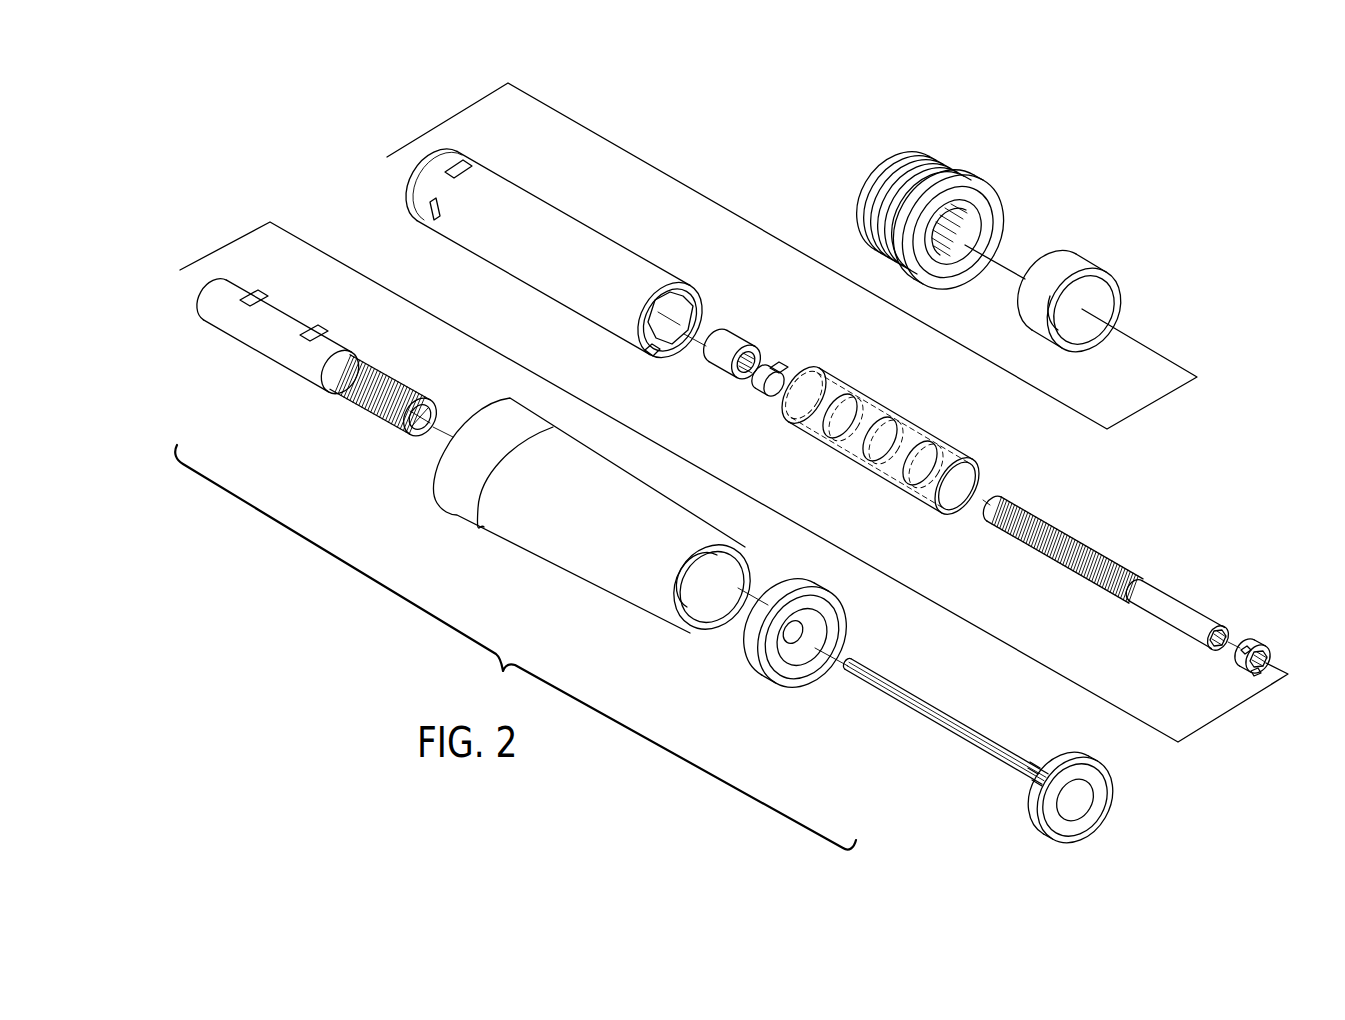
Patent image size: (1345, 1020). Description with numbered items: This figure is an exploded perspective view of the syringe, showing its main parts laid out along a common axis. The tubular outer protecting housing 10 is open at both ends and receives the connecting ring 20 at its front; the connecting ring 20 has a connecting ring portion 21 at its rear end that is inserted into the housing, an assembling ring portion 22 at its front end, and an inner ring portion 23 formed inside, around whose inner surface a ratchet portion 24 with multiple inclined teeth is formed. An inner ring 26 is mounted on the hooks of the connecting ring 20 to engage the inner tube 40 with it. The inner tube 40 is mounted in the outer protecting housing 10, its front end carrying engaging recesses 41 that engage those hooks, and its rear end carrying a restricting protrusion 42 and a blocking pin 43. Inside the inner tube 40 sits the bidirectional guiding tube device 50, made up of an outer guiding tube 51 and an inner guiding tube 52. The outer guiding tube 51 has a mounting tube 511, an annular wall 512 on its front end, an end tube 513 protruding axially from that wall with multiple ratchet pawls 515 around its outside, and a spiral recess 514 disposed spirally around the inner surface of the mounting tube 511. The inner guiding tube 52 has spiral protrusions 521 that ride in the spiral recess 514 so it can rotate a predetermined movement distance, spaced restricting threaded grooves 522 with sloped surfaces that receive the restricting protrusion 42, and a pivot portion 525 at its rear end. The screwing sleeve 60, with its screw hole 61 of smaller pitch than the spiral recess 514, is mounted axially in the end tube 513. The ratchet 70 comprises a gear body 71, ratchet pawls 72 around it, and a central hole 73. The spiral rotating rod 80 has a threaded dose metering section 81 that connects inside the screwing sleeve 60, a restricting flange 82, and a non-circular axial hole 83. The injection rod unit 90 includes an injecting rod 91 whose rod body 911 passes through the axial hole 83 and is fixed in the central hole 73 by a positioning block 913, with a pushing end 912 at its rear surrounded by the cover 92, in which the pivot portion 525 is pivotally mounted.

The outer protecting housing 10 is at (544, 572).
The connecting ring 20 is at (961, 212).
The connecting ring portion 21 is at (968, 180).
The assembling ring portion 22 is at (918, 166).
The inner ring portion 23 is at (963, 263).
The ratchet portion 24 is at (984, 233).
The inner ring 26 is at (1071, 263).
The inner tube 40 is at (580, 256).
The engaging recesses 41 is at (455, 167).
The restricting protrusion 42 is at (683, 350).
The blocking pin 43 is at (683, 318).
The bidirectional guiding tube device 50 is at (626, 389).
The outer guiding tube 51 is at (884, 425).
The mounting tube 511 is at (866, 467).
The annular wall 512 is at (822, 364).
The end tube 513 is at (773, 393).
The spiral recess 514 is at (890, 414).
The ratchet pawls 515 is at (788, 358).
The inner guiding tube 52 is at (341, 356).
The spiral protrusions 521 is at (257, 300).
The restricting threaded grooves 522 is at (347, 397).
The pivot portion 525 is at (417, 402).
The screwing sleeve 60 is at (745, 350).
The screw hole 61 is at (739, 382).
The ratchet 70 is at (1249, 648).
The gear body 71 is at (1265, 650).
The ratchet pawls 72 is at (1239, 656).
The central hole 73 is at (1264, 674).
The spiral rotating rod 80 is at (1126, 565).
The dose metering section 81 is at (1072, 530).
The restricting flange 82 is at (1150, 580).
The axial hole 83 is at (1232, 630).
The injection rod unit 90 is at (1007, 755).
The injecting rod 91 is at (1014, 755).
The rod body 911 is at (980, 743).
The pushing end 912 is at (1105, 792).
The positioning block 913 is at (1042, 770).
The cover 92 is at (794, 692).